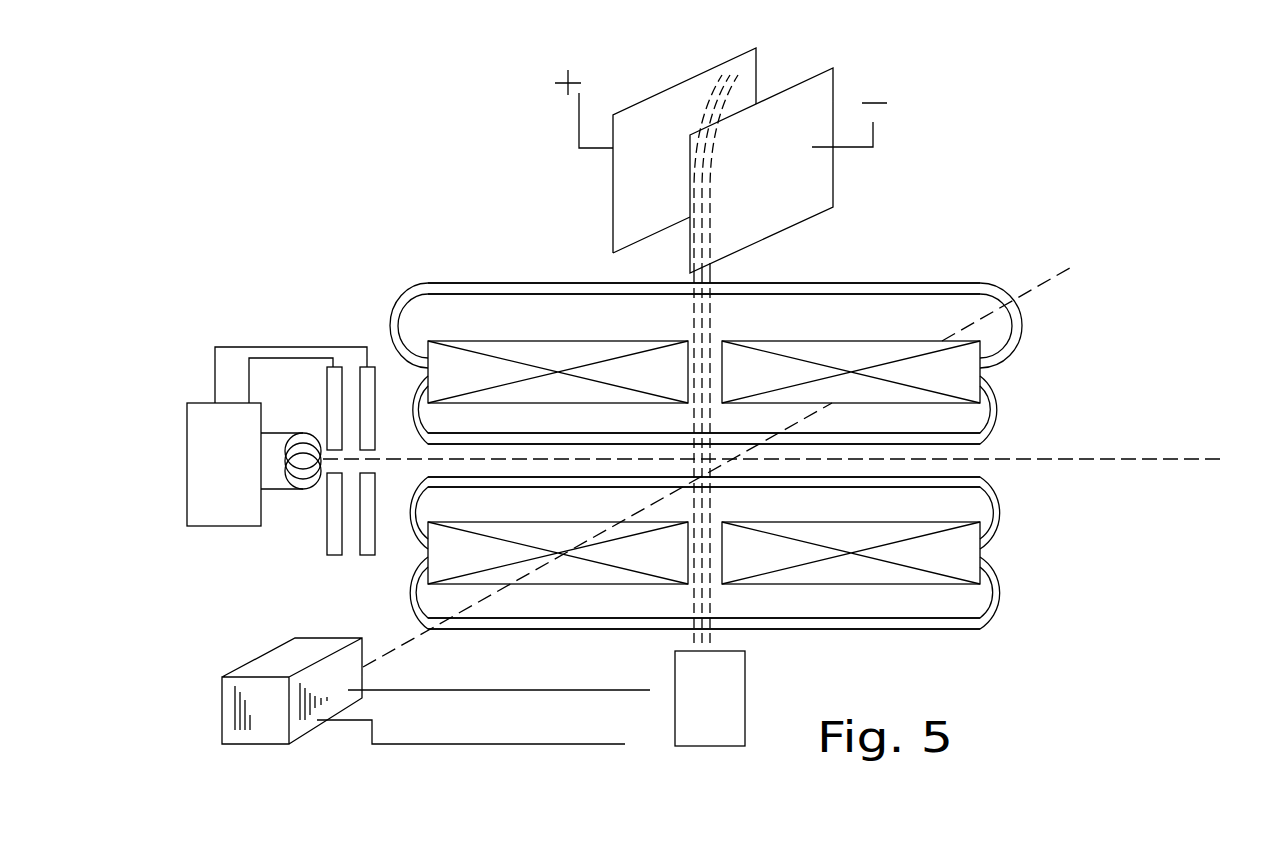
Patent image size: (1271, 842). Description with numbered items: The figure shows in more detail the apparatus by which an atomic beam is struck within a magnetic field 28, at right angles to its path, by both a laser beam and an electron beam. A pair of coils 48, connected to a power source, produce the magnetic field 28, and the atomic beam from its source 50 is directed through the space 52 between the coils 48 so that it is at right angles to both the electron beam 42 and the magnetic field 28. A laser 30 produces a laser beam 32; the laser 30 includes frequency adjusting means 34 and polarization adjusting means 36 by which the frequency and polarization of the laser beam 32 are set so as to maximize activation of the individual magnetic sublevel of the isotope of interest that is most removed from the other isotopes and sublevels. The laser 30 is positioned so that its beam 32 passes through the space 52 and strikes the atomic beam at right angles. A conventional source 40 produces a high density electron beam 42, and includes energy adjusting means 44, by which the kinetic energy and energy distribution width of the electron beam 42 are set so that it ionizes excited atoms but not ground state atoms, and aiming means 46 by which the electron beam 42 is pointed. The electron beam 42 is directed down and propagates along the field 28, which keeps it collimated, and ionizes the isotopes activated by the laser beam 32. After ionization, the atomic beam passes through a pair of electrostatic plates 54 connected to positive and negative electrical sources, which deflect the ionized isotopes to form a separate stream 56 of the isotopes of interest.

The magnetic field 28 is at (1022, 412).
The laser 30 is at (267, 665).
The laser beam 32 is at (395, 648).
The frequency adjusting means 34 is at (378, 737).
The polarization adjusting means 36 is at (382, 690).
The source 40 is at (289, 322).
The electron beam 42 is at (402, 461).
The energy adjusting means 44 is at (343, 358).
The aiming means 46 is at (355, 362).
The coils 48 is at (490, 350).
The source 50 is at (737, 699).
The space 52 is at (713, 340).
The electrostatic plates 54 is at (613, 184).
The separate stream 56 is at (732, 92).